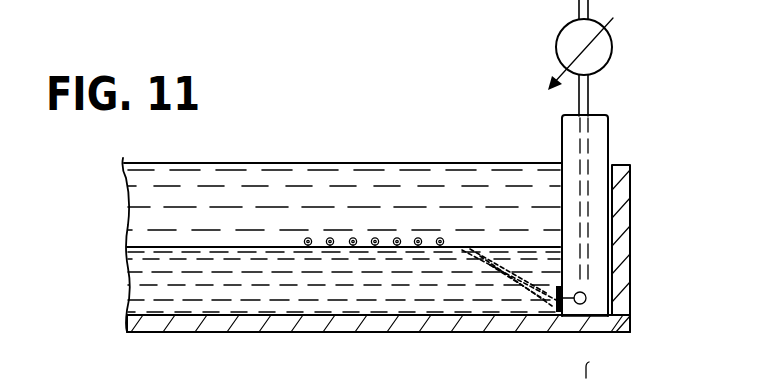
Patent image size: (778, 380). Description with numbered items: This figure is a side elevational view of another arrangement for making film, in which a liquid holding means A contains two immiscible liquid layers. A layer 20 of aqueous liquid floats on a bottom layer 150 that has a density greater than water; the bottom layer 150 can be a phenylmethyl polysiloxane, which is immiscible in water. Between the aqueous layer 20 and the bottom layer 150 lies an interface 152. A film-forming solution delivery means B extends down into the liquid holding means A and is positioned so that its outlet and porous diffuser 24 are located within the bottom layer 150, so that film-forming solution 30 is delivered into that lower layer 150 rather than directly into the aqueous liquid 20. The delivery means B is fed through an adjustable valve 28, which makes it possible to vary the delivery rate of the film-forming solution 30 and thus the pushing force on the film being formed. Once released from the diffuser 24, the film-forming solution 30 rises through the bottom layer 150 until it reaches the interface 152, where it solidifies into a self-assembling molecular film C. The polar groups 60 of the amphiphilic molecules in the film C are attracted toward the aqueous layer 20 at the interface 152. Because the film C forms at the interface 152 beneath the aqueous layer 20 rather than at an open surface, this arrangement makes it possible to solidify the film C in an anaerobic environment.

The aqueous liquid 20 is at (300, 193).
The porous member 24 is at (556, 310).
The adjustable valve 28 is at (613, 40).
The film-forming solution 30 is at (513, 278).
The polar groups 60 is at (350, 237).
The bottom layer 150 is at (146, 290).
The interface 152 is at (148, 245).
The liquid holding means A is at (237, 332).
The delivery means B is at (606, 114).
The self-assembling molecular film C is at (413, 228).